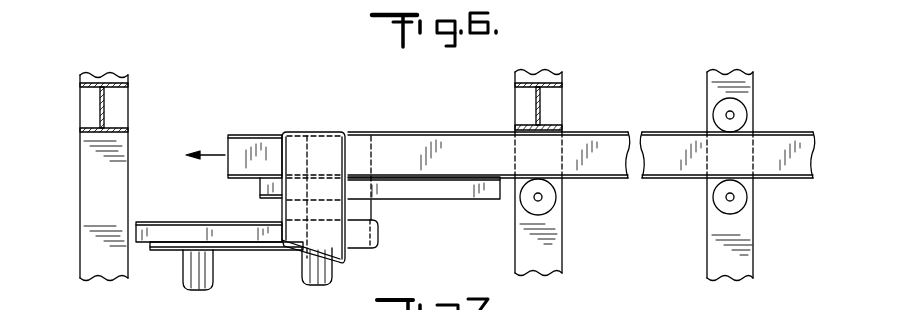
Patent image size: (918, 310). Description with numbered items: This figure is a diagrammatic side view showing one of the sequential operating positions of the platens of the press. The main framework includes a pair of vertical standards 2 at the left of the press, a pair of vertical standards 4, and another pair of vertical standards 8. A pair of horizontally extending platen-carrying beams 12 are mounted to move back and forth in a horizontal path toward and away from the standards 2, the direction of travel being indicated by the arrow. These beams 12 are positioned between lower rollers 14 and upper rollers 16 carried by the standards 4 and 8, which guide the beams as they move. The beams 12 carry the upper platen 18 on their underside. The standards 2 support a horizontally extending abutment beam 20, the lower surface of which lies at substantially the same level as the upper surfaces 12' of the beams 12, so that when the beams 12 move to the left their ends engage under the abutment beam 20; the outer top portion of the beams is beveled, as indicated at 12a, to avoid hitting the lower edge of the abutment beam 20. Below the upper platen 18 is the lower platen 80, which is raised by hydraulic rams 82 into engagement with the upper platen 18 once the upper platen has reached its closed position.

The vertical standards 2 is at (115, 190).
The vertical standards 4 is at (550, 252).
The vertical standards 8 is at (748, 260).
The platen-carrying beams 12 is at (581, 137).
The beveled outer top portion 12a is at (241, 134).
The upper surfaces 12' is at (310, 178).
The lower rollers 14 is at (547, 205).
The upper rollers 16 is at (722, 103).
The upper platen 18 is at (180, 223).
The abutment beam 20 is at (106, 103).
The lower platen 80 is at (380, 238).
The hydraulic rams 82 is at (186, 280).